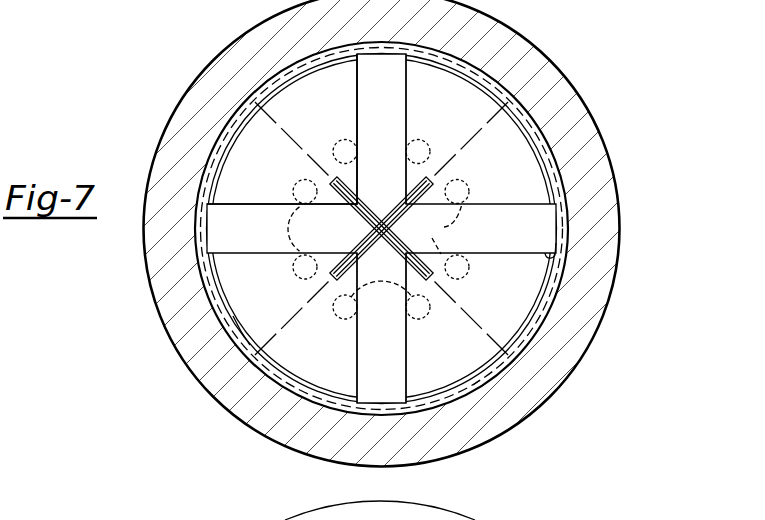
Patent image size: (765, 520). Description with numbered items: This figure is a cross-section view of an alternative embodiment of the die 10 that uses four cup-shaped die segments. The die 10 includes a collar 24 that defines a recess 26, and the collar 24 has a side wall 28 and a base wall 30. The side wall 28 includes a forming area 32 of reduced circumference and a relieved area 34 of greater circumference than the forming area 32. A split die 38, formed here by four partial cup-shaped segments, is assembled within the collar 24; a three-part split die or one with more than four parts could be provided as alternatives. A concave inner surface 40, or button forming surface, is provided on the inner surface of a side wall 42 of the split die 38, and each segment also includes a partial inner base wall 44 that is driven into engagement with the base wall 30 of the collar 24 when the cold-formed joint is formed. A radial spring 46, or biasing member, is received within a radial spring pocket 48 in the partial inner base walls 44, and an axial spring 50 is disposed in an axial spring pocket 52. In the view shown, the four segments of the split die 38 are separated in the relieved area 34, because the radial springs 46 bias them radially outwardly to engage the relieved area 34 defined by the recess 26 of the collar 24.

The die 10 is at (560, 63).
The collar 24 is at (223, 44).
The recess 26 is at (366, 377).
The side wall 28 is at (586, 329).
The base wall 30 is at (523, 230).
The forming area 32 is at (473, 385).
The relieved area 34 is at (556, 249).
The split die 38 is at (282, 177).
The concave inner surface 40 is at (233, 316).
The side wall 42 is at (532, 150).
The partial inner base wall 44 is at (326, 129).
The radial spring 46 is at (363, 237).
The radial spring pocket 48 is at (418, 180).
The axial spring 50 is at (287, 227).
The axial spring pocket 52 is at (381, 275).